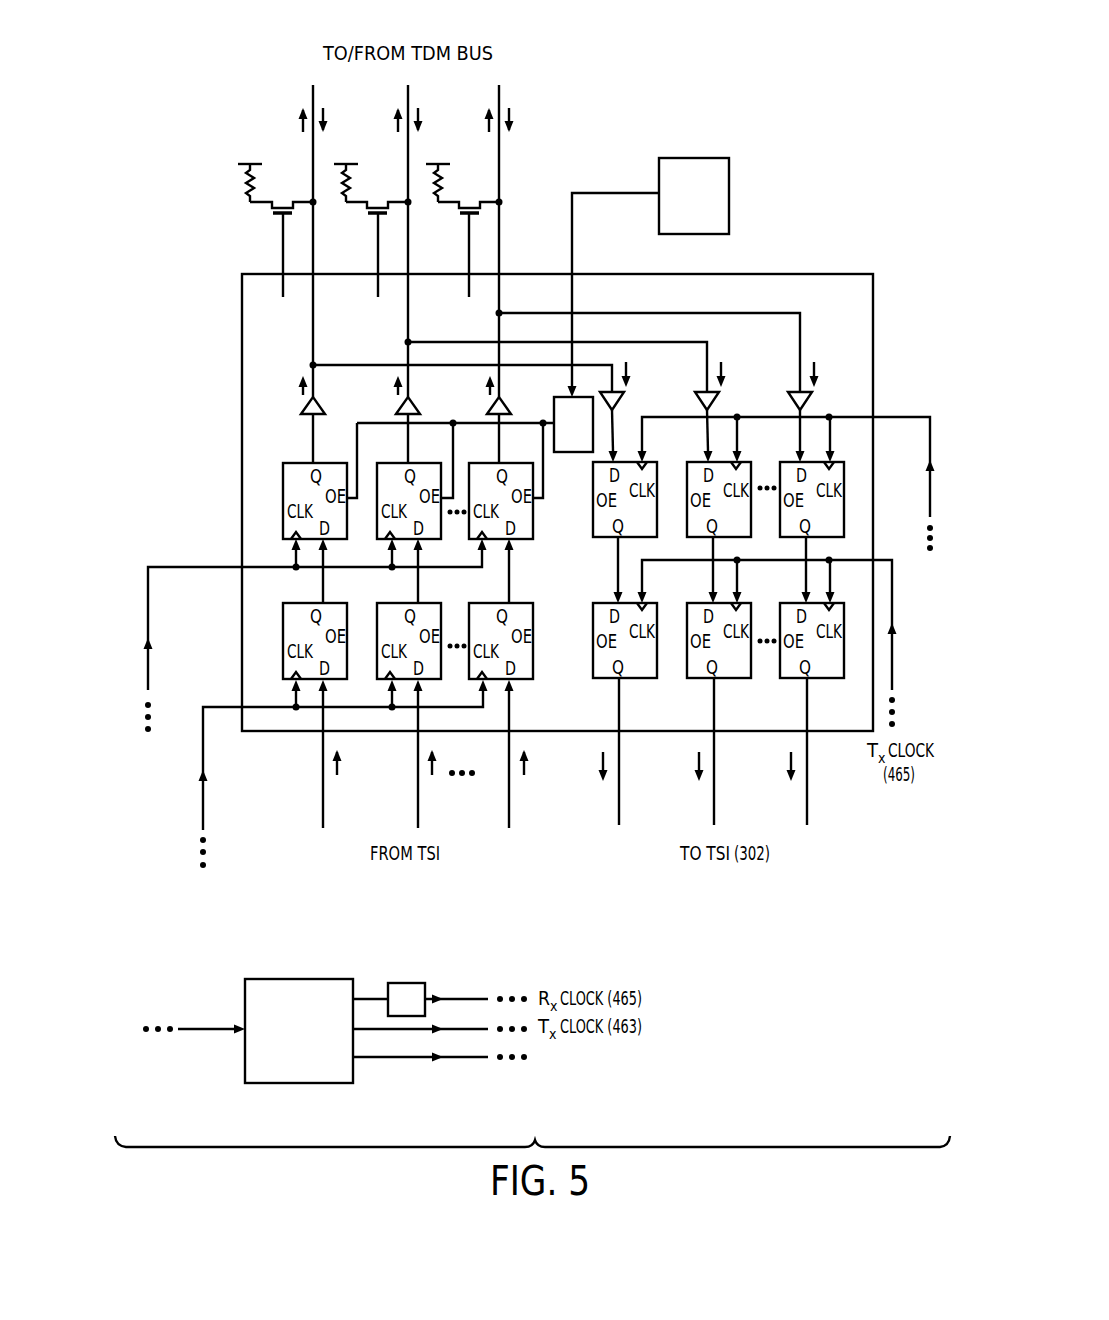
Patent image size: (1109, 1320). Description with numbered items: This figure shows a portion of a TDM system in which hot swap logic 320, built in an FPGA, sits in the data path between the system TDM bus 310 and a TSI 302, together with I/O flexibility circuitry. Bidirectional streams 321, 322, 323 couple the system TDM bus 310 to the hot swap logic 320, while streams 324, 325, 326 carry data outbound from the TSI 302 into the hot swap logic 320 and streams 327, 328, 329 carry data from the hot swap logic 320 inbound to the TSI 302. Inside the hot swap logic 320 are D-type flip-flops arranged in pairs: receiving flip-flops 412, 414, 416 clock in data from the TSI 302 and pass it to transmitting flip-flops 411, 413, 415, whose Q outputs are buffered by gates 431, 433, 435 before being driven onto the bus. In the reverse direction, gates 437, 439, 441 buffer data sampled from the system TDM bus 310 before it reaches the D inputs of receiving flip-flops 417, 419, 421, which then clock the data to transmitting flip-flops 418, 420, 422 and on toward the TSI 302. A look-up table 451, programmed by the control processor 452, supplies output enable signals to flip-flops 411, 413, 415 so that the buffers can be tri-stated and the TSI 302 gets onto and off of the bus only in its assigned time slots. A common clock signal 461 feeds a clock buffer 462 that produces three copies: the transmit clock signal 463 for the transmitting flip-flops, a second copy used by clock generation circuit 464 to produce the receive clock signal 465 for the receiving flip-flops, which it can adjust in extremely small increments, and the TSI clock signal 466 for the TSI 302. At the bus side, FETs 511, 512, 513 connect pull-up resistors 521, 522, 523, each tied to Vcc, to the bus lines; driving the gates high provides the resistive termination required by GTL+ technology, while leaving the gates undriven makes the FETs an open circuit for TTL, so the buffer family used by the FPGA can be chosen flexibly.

The system TDM bus 310 is at (474, 53).
The TSI 302 is at (462, 853).
The hot swap logic 320 is at (242, 452).
The bidirectional stream 321 is at (313, 96).
The bidirectional stream 322 is at (408, 96).
The bidirectional stream 323 is at (499, 96).
The stream 324 is at (323, 797).
The stream 325 is at (418, 797).
The stream 326 is at (509, 797).
The stream 327 is at (621, 797).
The stream 328 is at (716, 797).
The stream 329 is at (809, 797).
The flip-flop 411 is at (283, 512).
The flip-flop 412 is at (283, 630).
The flip-flop 413 is at (378, 508).
The flip-flop 414 is at (377, 630).
The flip-flop 415 is at (533, 525).
The flip-flop 416 is at (469, 630).
The flip-flop 417 is at (593, 512).
The flip-flop 418 is at (593, 625).
The flip-flop 419 is at (687, 480).
The flip-flop 420 is at (687, 625).
The flip-flop 421 is at (780, 480).
The flip-flop 422 is at (780, 625).
The gate 431 is at (303, 409).
The gate 433 is at (398, 409).
The gate 435 is at (490, 409).
The gate 437 is at (625, 401).
The gate 439 is at (720, 401).
The gate 441 is at (813, 401).
The look-up table 451 is at (553, 400).
The control processor 452 is at (729, 196).
The common clock signal 461 is at (182, 1055).
The clock buffer 462 is at (298, 1084).
The transmit clock signal 463 is at (302, 663).
The clock generation circuit 464 is at (803, 513).
The receive clock signal 465 is at (331, 801).
The TSI clock signal 466 is at (496, 1054).
The FET 511 is at (272, 211).
The FET 512 is at (373, 220).
The FET 513 is at (465, 220).
The pull-up resistor 521 is at (247, 183).
The pull-up resistor 522 is at (352, 180).
The pull-up resistor 523 is at (444, 180).